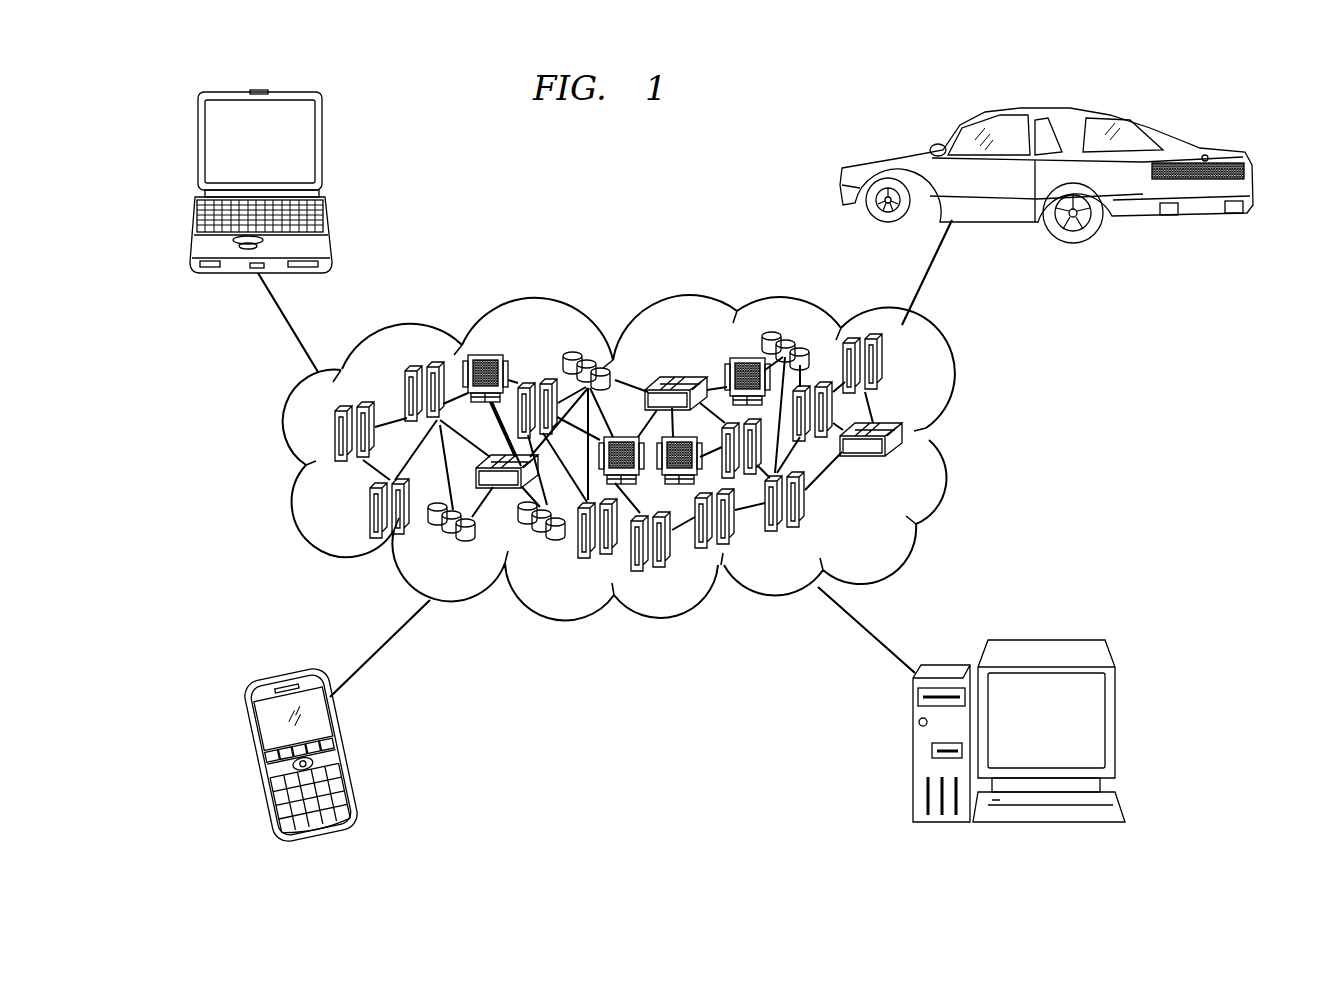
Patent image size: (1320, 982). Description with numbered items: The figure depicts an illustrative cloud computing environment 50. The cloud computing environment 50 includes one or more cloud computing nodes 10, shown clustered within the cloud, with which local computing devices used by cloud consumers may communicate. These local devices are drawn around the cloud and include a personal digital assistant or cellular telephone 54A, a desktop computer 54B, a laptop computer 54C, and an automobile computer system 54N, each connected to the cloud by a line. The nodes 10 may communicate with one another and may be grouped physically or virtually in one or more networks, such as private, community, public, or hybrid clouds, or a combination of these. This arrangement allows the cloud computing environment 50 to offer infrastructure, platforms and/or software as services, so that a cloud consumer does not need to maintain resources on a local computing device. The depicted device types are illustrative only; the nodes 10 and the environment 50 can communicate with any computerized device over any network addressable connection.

The cloud computing nodes 10 is at (906, 464).
The cloud computing environment 50 is at (957, 388).
The personal digital assistant (PDA) or cellular telephone 54A is at (242, 745).
The desktop computer 54B is at (1048, 640).
The laptop computer 54C is at (198, 137).
The automobile computer system 54N is at (1222, 147).